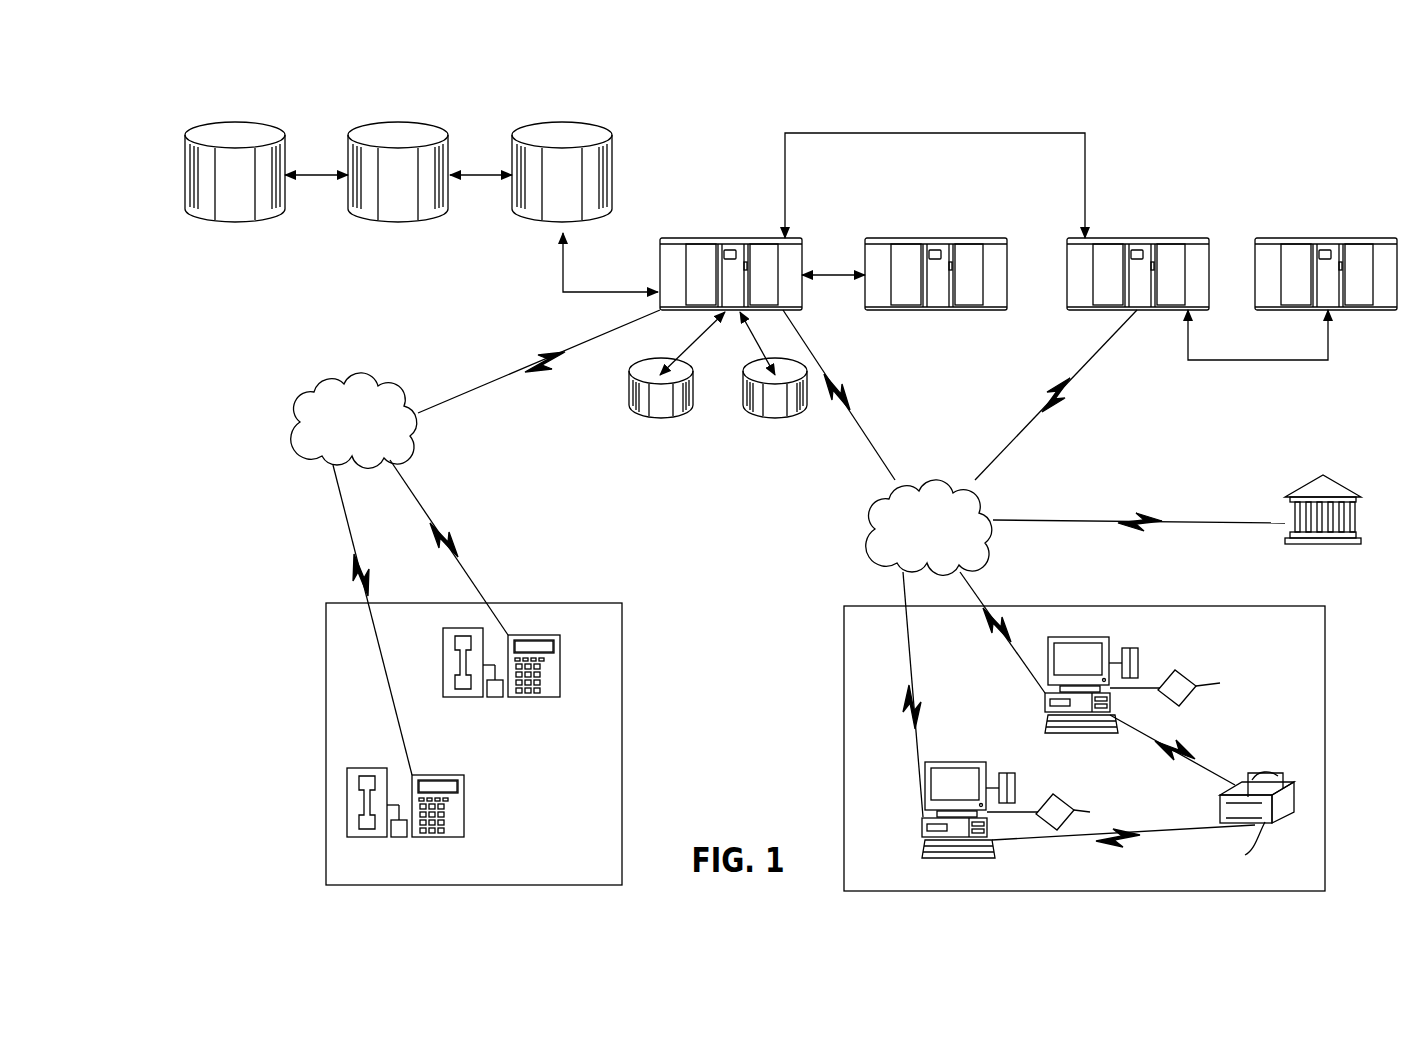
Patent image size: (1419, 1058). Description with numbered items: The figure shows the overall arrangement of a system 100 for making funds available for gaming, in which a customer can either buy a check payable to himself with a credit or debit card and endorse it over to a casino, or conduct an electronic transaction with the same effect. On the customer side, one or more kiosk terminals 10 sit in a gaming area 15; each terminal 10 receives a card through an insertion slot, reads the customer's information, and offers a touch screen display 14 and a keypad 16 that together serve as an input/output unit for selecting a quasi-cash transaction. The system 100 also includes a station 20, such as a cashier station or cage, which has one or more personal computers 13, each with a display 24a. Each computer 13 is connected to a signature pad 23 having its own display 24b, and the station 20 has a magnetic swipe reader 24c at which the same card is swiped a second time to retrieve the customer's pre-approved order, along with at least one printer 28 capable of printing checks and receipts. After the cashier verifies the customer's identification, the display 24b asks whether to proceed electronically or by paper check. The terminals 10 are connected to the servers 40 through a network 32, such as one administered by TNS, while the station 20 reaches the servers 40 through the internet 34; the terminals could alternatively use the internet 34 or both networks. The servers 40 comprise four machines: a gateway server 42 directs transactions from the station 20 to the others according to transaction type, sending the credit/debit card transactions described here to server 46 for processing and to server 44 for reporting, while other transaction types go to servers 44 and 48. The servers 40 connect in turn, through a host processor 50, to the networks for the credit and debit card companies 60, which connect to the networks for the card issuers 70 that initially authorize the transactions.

The system 100 is at (260, 733).
The card issuers 70 is at (235, 222).
The networks for the credit and debit card companies 60 is at (398, 222).
The host processor 50 is at (540, 222).
The server 46 is at (668, 238).
The server 48 is at (998, 238).
The gateway server 42 is at (1198, 238).
The server 44 is at (1385, 238).
The servers 40 is at (1145, 393).
The network 32 is at (432, 433).
The internet 34 is at (845, 520).
The gaming area 15 is at (538, 603).
The kiosk terminal 10 is at (480, 756).
The touch screen display 14 is at (556, 651).
The keypad 16 is at (535, 697).
The station 20 is at (1224, 606).
The personal computer 13 is at (1081, 724).
The display 24a is at (1078, 650).
The display 24b is at (1185, 676).
The magnetic swipe reader 24c is at (1140, 663).
The signature pad 23 is at (1186, 697).
The printer 28 is at (1278, 826).